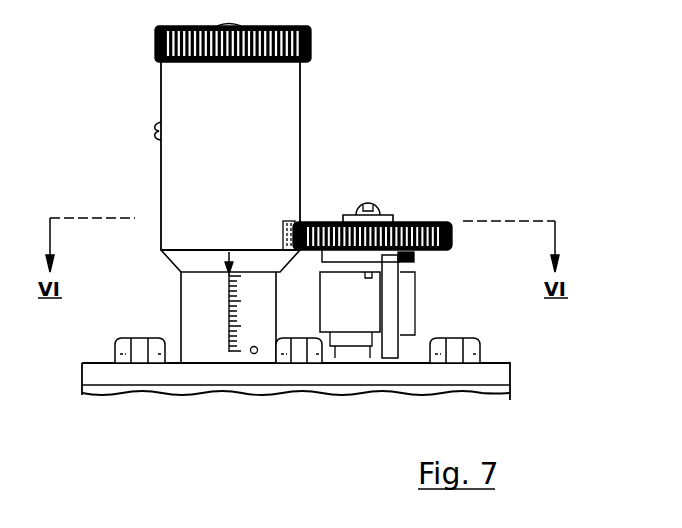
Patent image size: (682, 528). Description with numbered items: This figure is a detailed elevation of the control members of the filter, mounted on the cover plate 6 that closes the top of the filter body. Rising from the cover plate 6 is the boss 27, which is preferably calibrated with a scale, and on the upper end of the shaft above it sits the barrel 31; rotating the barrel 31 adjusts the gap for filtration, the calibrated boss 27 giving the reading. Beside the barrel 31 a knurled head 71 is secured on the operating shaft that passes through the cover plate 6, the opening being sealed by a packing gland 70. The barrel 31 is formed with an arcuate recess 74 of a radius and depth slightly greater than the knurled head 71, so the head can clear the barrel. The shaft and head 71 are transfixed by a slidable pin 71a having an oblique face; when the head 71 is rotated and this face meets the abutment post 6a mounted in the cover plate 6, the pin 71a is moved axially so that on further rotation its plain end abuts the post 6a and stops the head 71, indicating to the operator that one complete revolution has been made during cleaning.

The barrel 31 is at (212, 157).
The boss 27 is at (196, 300).
The arcuate recess 74 is at (284, 228).
The knurled head 71 is at (427, 222).
The pin 71a is at (419, 257).
The abutment post 6a is at (400, 315).
The packing gland 70 is at (353, 318).
The cover plate 6 is at (503, 381).